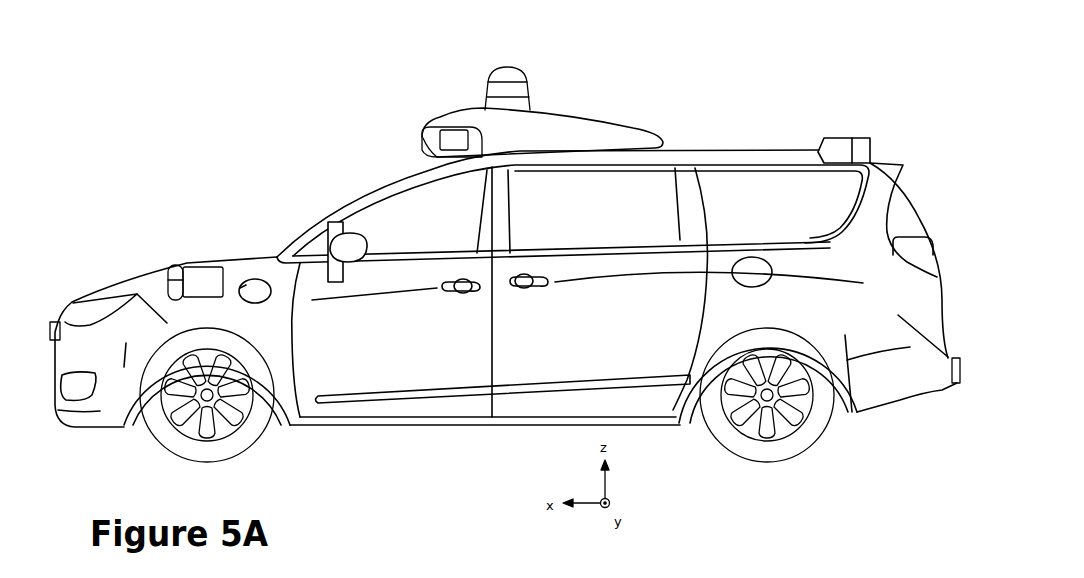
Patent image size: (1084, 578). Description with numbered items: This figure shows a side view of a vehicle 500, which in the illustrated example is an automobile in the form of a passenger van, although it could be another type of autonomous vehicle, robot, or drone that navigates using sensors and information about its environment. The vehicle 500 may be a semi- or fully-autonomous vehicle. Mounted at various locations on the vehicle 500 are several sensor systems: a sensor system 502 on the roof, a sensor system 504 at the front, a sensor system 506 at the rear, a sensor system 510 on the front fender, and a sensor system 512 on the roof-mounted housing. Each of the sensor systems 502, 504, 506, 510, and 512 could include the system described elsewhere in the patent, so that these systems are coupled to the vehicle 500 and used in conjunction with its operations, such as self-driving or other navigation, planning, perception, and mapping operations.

The vehicle 500 is at (867, 82).
The sensor system 502 is at (522, 72).
The sensor system 504 is at (62, 322).
The sensor system 506 is at (957, 387).
The sensor system 510 is at (183, 283).
The sensor system 512 is at (421, 148).